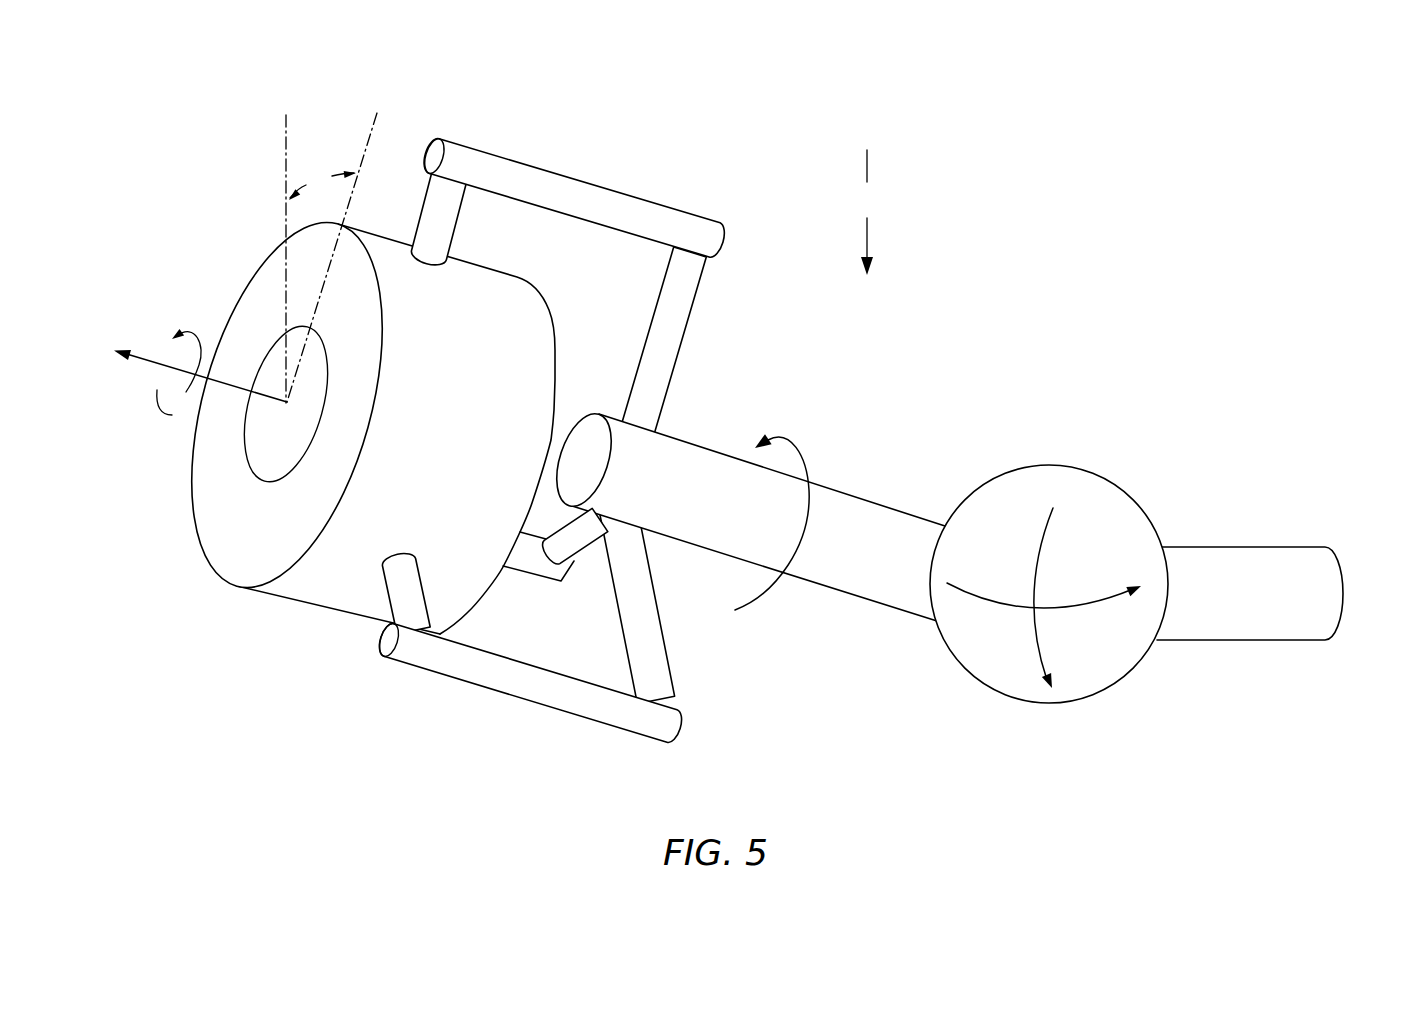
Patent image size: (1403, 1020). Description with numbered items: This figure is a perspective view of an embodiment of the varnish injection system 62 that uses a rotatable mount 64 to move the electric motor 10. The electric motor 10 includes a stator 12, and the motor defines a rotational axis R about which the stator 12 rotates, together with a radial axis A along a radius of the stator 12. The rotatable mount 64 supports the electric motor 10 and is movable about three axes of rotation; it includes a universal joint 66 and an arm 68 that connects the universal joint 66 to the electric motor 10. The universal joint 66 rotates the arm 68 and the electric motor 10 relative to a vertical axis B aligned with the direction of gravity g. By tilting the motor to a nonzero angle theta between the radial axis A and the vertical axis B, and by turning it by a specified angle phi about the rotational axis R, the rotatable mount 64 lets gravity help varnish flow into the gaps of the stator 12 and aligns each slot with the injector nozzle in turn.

The electric motor 10 is at (717, 410).
The stator 12 is at (332, 620).
The varnish injection system 62 is at (408, 410).
The rotatable mount 64 is at (943, 515).
The universal joint 66 is at (1112, 480).
The arm 68 is at (898, 507).